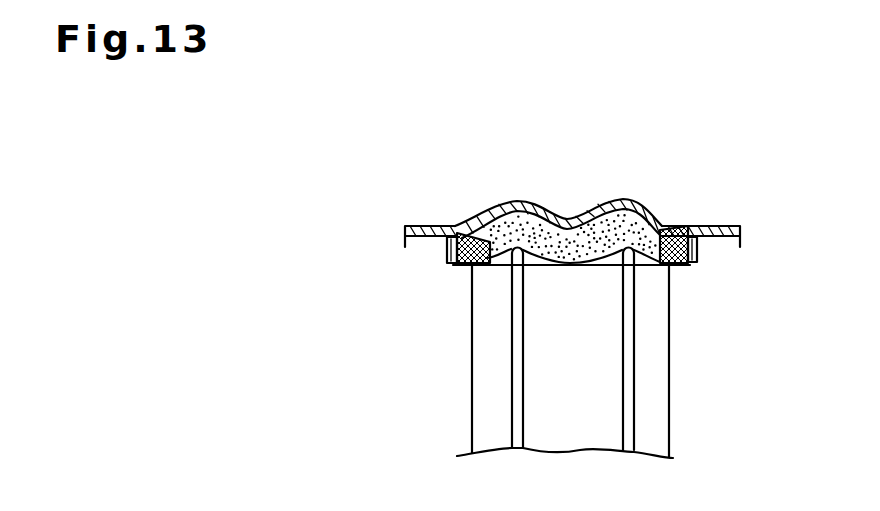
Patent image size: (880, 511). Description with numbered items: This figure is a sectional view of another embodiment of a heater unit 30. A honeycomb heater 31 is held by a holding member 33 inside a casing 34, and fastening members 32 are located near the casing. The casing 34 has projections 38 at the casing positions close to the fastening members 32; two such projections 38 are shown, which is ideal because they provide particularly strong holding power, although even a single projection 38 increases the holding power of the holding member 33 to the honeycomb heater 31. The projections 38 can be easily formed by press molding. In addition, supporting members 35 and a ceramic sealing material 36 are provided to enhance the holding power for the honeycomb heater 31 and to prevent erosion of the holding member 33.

The heater unit 30 is at (640, 162).
The honeycomb heater 31 is at (657, 383).
The fastening members 32 is at (627, 318).
The holding member 33 is at (571, 250).
The casing 34 is at (423, 227).
The supporting members 35 is at (445, 258).
The ceramic sealing material 36 is at (462, 263).
The projections 38 is at (648, 202).